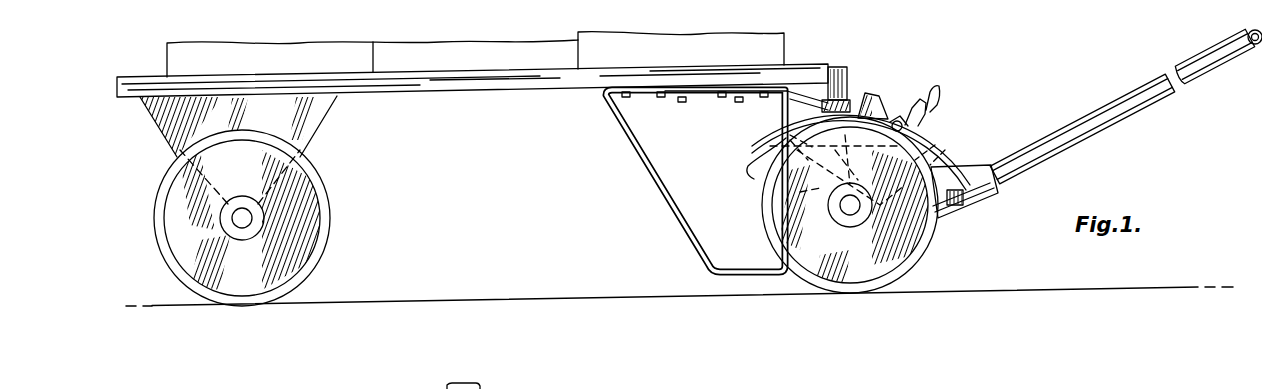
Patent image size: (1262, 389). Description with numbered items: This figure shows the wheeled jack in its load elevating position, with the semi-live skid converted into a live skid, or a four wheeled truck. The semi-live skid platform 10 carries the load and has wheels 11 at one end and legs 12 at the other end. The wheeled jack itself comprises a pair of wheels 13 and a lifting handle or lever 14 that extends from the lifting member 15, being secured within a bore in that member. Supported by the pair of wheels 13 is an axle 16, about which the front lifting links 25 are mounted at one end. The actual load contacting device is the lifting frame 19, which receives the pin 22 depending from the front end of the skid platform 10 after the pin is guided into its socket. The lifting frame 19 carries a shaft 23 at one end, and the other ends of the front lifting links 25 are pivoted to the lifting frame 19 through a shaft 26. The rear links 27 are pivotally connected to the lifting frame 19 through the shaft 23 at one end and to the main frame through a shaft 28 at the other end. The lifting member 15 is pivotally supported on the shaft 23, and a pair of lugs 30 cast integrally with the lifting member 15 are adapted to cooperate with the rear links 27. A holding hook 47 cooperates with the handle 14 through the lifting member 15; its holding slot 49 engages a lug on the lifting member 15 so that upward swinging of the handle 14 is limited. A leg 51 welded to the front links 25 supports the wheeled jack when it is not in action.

The semi-live skid platform 10 is at (500, 82).
The wheels 11 is at (331, 213).
The legs 12 is at (658, 188).
The pair of wheels 13 is at (921, 254).
The lifting handle or lever 14 is at (1083, 113).
The lifting member 15 is at (989, 197).
The axle 16 is at (850, 216).
The lifting frame 19 is at (870, 93).
The pin 22 is at (849, 70).
The shaft 23 is at (897, 120).
The front lifting links 25 is at (800, 192).
The shaft 26 is at (790, 135).
The rear links 27 is at (935, 145).
The shaft 28 is at (945, 150).
The lugs 30 is at (963, 206).
The holding hook 47 is at (936, 92).
The holding slot 49 is at (944, 110).
The leg 51 is at (746, 166).